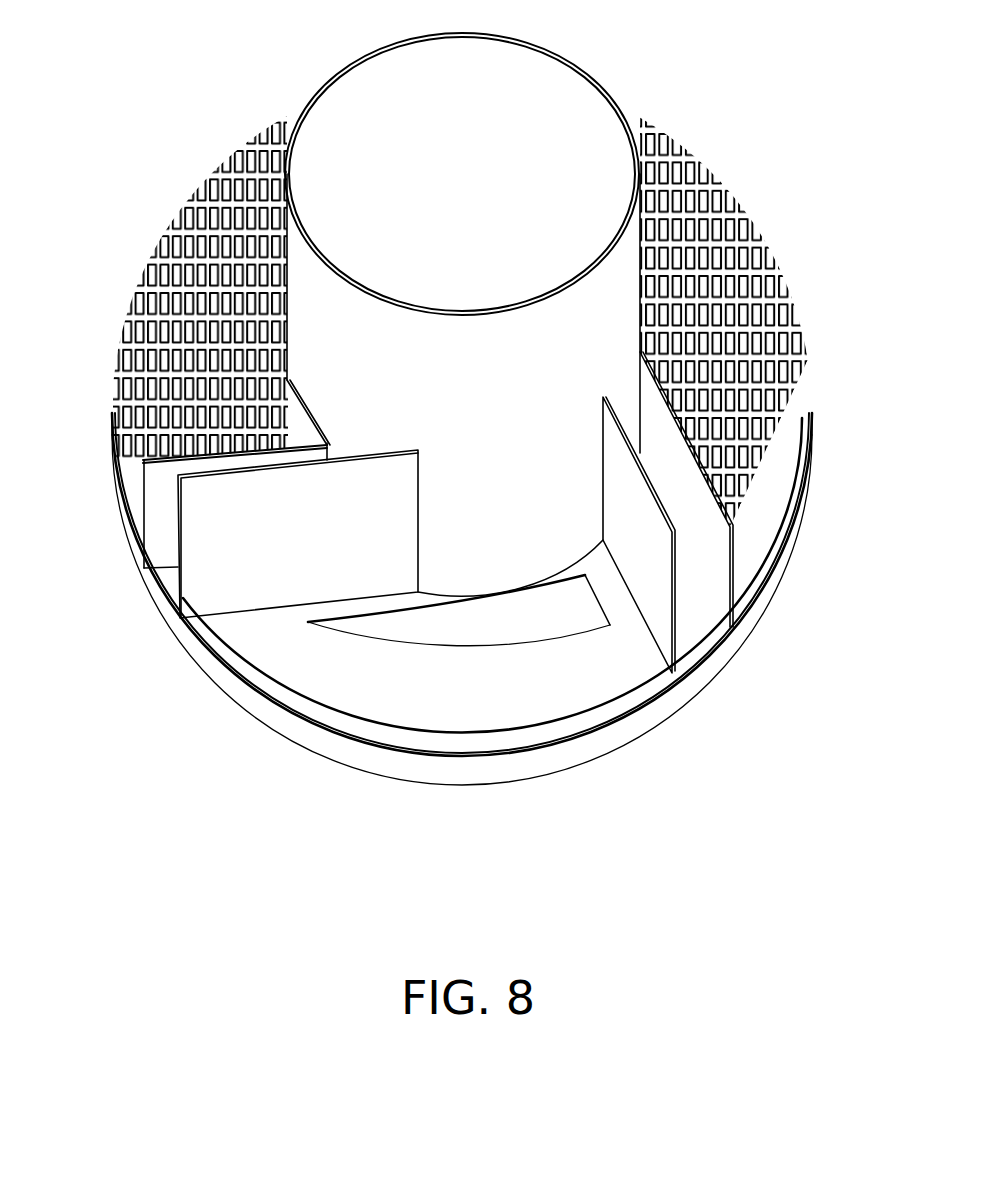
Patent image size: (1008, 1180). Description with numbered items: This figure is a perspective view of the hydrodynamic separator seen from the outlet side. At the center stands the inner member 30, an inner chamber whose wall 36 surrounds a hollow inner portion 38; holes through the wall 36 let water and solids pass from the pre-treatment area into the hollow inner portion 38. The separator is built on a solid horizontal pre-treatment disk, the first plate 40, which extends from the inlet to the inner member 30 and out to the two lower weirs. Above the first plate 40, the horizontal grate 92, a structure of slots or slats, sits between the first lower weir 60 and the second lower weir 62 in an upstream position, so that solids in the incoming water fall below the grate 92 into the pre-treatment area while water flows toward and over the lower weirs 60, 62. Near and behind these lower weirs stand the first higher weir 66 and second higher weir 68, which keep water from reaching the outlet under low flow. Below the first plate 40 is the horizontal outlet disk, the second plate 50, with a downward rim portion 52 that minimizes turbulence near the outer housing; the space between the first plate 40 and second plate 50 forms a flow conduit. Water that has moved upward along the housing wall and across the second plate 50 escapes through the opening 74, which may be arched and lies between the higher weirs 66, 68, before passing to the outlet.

The inner member 30 is at (607, 310).
The wall 36 is at (330, 330).
The hollow inner portion 38 is at (472, 157).
The first plate 40 is at (775, 505).
The second plate 50 is at (458, 743).
The downward rim portion 52 is at (352, 758).
The first lower weir 60 is at (160, 507).
The second lower weir 62 is at (708, 542).
The first higher weir 66 is at (247, 560).
The second higher weir 68 is at (648, 577).
The opening 74 is at (455, 648).
The horizontal grate 92 is at (215, 313).